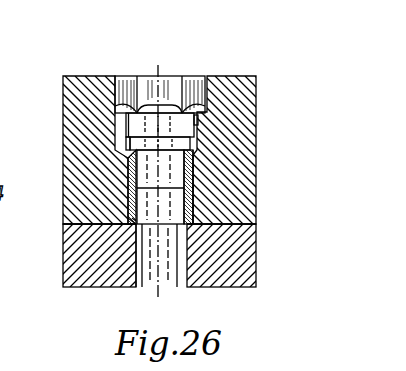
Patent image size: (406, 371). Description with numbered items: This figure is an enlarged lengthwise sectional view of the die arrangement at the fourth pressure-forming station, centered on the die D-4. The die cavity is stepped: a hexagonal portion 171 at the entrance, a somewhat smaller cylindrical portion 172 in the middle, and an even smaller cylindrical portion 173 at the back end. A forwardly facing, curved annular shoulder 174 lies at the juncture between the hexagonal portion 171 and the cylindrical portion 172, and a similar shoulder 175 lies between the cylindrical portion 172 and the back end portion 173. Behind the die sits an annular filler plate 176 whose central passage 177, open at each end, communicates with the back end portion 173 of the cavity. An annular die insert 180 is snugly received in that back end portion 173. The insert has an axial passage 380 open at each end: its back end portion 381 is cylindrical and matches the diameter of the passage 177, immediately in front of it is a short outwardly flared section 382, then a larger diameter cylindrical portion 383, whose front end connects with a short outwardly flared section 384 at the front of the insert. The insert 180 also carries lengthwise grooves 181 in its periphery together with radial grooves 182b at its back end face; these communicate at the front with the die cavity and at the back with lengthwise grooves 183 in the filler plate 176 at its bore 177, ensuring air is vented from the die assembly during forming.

The die D-4 is at (240, 85).
The hexagonal portion of die cavity 171 is at (192, 93).
The cylindrical portion of die cavity 172 is at (197, 120).
The back end cylindrical portion of die cavity 173 is at (197, 143).
The curved annular shoulder 174 is at (123, 77).
The annular shoulder 175 is at (127, 127).
The annular filler plate 176 is at (238, 268).
The central passage 177 is at (140, 265).
The annular die insert 180 is at (197, 190).
The lengthwise grooves 181 is at (193, 165).
The parting line 182b is at (193, 226).
The lengthwise grooves in filler plate 183 is at (178, 279).
The axial passage 380 is at (135, 165).
The back end portion of passage 381 is at (136, 226).
The outwardly flared section 382 is at (135, 212).
The larger diameter cylindrical portion 383 is at (140, 175).
The outwardly flared section at front end 384 is at (128, 150).